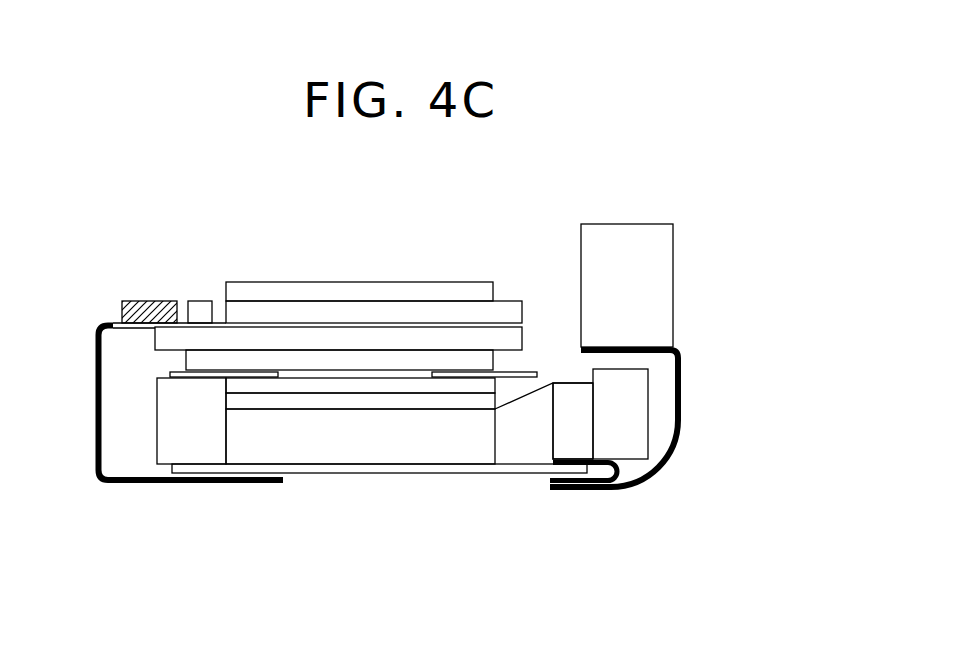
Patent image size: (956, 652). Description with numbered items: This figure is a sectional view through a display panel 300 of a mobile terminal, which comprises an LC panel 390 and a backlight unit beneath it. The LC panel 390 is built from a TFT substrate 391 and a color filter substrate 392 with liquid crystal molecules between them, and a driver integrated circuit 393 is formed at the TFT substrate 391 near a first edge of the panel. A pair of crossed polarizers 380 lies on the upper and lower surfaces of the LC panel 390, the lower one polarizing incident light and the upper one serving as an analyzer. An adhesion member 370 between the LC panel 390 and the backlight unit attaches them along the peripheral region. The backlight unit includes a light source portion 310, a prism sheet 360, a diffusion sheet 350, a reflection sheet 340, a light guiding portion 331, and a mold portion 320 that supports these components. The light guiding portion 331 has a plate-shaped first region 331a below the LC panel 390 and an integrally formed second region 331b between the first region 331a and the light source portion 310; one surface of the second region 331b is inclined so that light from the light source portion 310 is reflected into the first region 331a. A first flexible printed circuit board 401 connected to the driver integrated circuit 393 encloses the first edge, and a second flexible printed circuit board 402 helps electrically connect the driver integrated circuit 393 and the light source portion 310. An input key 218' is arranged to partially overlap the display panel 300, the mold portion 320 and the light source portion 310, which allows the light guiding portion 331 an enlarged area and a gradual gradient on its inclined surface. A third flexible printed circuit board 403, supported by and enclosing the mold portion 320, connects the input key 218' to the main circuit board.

The display panel 300 is at (148, 265).
The light source portion 310 is at (563, 432).
The mold portion 320 is at (193, 442).
The light guiding portion 331 is at (409, 499).
The first region 331a is at (427, 437).
The second region 331b is at (535, 385).
The reflection sheet 340 is at (383, 467).
The diffusion sheet 350 is at (343, 398).
The prism sheet 360 is at (301, 383).
The adhesion member 370 is at (180, 378).
The polarizers 380 is at (247, 358).
The LC panel 390 is at (338, 264).
The TFT substrate 391 is at (405, 342).
The color filter substrate 392 is at (365, 314).
The driver integrated circuit 393 is at (200, 312).
The first flexible printed circuit board 401 is at (96, 432).
The second flexible printed circuit board 402 is at (680, 386).
The third flexible printed circuit board 403 is at (620, 472).
The input key 218' is at (672, 285).